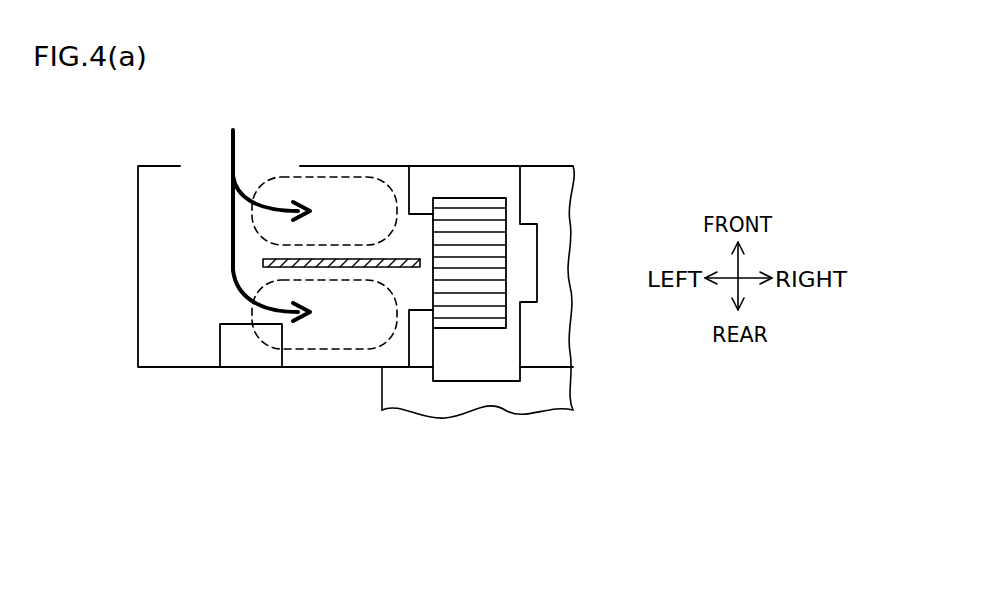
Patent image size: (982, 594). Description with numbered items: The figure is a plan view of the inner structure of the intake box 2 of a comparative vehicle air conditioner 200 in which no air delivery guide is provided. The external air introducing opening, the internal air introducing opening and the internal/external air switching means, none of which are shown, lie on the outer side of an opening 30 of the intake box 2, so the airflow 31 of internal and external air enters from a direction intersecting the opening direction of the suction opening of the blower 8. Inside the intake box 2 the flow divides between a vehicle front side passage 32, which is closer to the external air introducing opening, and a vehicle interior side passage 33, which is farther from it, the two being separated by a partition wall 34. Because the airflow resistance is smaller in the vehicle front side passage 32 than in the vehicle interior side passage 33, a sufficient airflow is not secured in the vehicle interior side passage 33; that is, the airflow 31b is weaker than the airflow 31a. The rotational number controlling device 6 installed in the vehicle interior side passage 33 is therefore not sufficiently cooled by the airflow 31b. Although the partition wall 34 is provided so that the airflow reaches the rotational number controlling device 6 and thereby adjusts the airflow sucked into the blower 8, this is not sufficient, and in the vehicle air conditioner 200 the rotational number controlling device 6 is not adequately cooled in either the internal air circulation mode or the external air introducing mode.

The vehicle air conditioner 200 is at (611, 112).
The opening 30 is at (200, 168).
The intake box 2 is at (393, 166).
The blower 8 is at (473, 198).
The airflow 31 is at (235, 148).
The airflow 31a is at (277, 212).
The airflow 31b is at (278, 300).
The vehicle front side passage 32 is at (285, 177).
The vehicle interior side passage 33 is at (317, 350).
The partition wall 34 is at (400, 268).
The rotational number controlling device 6 is at (222, 347).